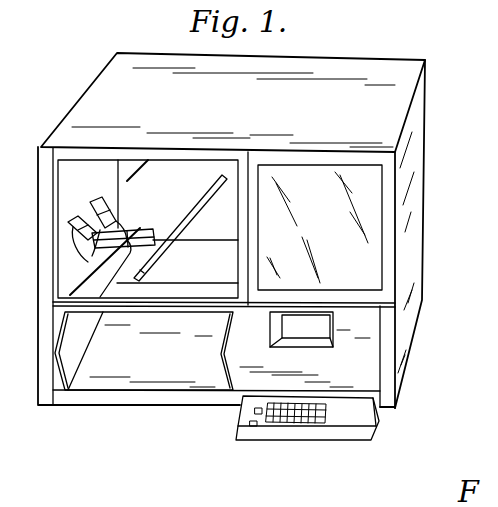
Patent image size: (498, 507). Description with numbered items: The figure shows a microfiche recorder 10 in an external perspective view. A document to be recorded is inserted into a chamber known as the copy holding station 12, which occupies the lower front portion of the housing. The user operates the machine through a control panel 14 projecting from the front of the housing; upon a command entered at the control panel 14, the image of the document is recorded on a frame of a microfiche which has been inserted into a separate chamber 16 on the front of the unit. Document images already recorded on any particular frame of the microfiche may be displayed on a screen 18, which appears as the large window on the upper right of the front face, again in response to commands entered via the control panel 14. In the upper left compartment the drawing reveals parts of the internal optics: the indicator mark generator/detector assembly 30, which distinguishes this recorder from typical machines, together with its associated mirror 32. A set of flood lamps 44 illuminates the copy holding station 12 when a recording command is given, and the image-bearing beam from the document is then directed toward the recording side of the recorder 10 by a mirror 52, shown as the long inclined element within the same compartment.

The microfiche recorder 10 is at (61, 100).
The copy holding station 12 is at (140, 377).
The control panel 14 is at (242, 432).
The chamber 16 is at (318, 333).
The screen 18 is at (330, 234).
The indicator mark generator/detector assembly 30 is at (152, 232).
The mirror 32 is at (143, 172).
The flood lamps 44 is at (110, 222).
The mirror 52 is at (198, 215).